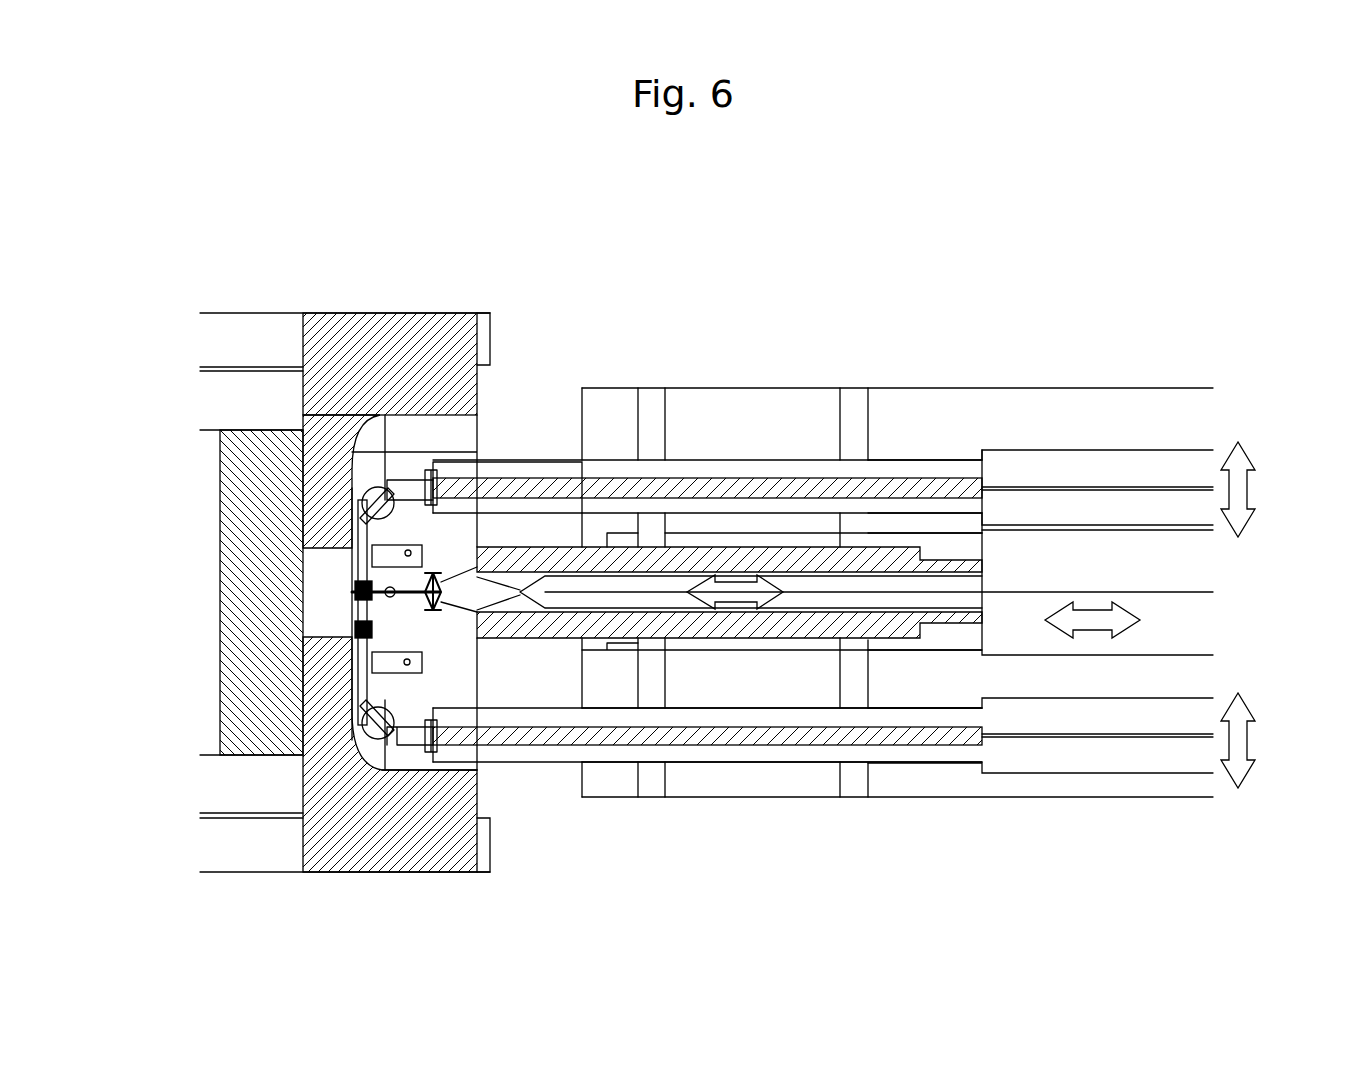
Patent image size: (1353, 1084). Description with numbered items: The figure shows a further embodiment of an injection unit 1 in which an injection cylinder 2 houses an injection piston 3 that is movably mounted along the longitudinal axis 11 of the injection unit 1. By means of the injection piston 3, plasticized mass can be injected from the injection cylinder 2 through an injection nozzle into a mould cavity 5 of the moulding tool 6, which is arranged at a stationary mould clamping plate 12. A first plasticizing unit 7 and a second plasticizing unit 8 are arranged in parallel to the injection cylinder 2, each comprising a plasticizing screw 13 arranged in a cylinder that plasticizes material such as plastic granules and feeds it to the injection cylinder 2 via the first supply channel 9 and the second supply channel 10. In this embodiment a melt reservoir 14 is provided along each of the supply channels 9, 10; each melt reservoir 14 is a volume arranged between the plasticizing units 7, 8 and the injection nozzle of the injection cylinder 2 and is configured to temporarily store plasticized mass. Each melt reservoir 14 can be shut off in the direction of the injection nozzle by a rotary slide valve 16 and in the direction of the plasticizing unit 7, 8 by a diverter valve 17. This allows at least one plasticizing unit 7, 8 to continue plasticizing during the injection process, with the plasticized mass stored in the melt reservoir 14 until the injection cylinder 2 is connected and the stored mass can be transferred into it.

The injection unit 1 is at (470, 235).
The injection cylinder 2 is at (512, 558).
The injection piston 3 is at (618, 592).
The mould cavity 5 is at (212, 590).
The moulding tool 6 is at (272, 447).
The first plasticizing unit 7 is at (680, 470).
The second plasticizing unit 8 is at (738, 752).
The first supply channel 9 is at (414, 492).
The second supply channel 10 is at (407, 732).
The longitudinal axis 11 is at (1090, 588).
The stationary mould clamping plate 12 is at (428, 830).
The plasticizing screw 13 is at (807, 487).
The melt reservoir 14 is at (405, 660).
The rotary slide valve 16 is at (362, 638).
The diverter valve 17 is at (358, 736).